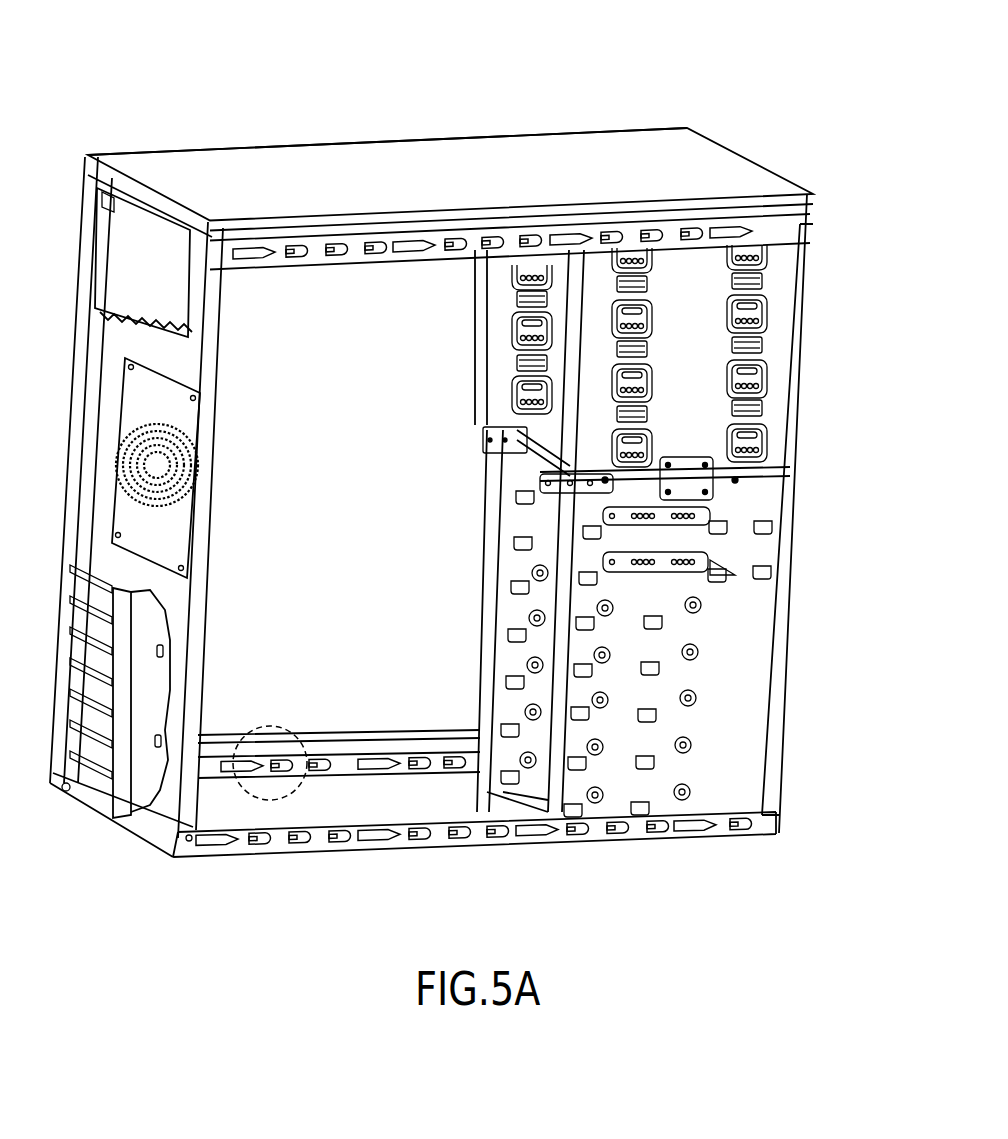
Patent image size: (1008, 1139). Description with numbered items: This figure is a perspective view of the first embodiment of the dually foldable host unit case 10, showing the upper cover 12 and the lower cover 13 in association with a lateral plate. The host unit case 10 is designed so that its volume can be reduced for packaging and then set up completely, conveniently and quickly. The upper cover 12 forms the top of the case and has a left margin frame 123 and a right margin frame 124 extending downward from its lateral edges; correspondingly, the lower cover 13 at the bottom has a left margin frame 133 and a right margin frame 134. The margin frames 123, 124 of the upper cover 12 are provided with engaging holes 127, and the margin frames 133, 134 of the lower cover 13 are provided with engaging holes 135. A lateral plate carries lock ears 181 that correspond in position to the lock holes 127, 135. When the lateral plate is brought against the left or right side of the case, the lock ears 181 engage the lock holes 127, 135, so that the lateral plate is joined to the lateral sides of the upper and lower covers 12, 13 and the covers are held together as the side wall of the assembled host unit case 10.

The host unit case 10 is at (316, 48).
The upper cover 12 is at (702, 160).
The left margin frame 123 is at (637, 128).
The right margin frame 124 is at (783, 233).
The engaging hole 127 is at (567, 240).
The lower cover 13 is at (387, 812).
The left margin frame 133 is at (420, 772).
The right margin frame 134 is at (640, 832).
The engaging hole 135 is at (243, 768).
The lock ear 181 is at (280, 767).